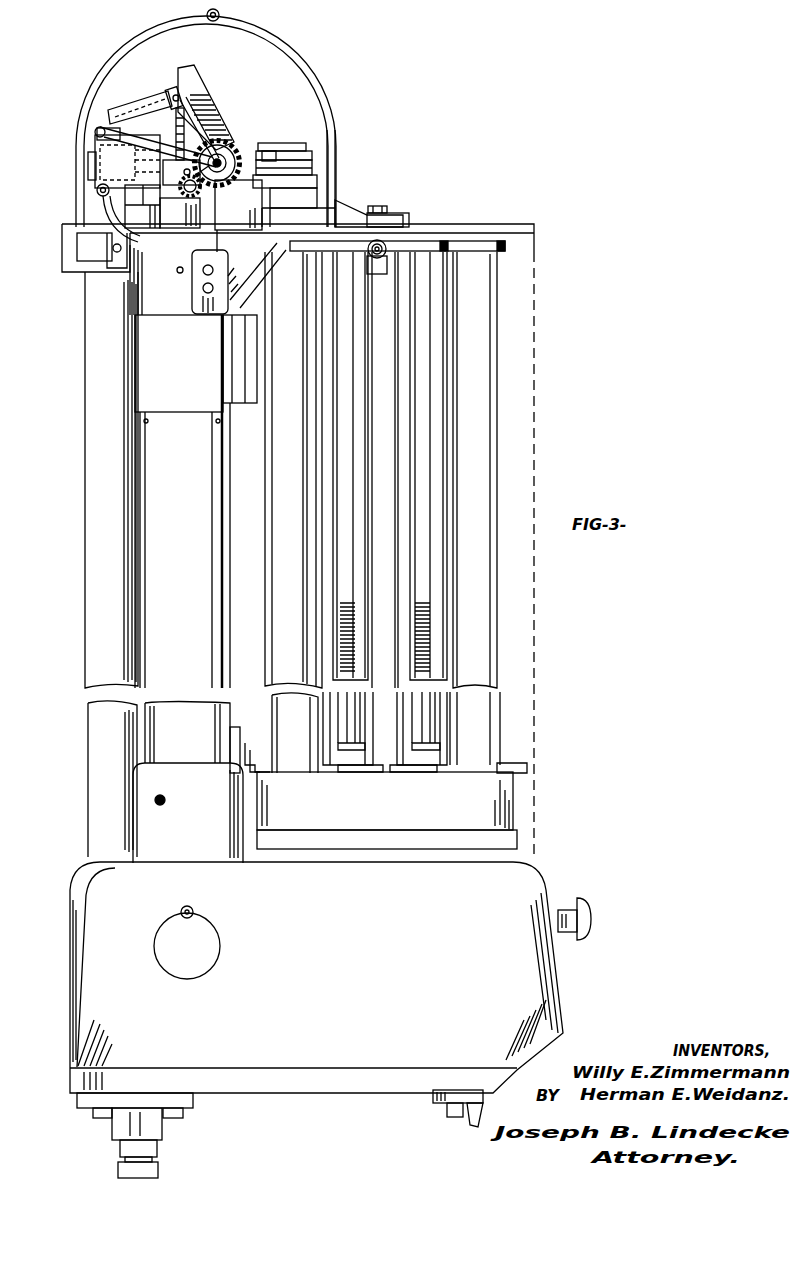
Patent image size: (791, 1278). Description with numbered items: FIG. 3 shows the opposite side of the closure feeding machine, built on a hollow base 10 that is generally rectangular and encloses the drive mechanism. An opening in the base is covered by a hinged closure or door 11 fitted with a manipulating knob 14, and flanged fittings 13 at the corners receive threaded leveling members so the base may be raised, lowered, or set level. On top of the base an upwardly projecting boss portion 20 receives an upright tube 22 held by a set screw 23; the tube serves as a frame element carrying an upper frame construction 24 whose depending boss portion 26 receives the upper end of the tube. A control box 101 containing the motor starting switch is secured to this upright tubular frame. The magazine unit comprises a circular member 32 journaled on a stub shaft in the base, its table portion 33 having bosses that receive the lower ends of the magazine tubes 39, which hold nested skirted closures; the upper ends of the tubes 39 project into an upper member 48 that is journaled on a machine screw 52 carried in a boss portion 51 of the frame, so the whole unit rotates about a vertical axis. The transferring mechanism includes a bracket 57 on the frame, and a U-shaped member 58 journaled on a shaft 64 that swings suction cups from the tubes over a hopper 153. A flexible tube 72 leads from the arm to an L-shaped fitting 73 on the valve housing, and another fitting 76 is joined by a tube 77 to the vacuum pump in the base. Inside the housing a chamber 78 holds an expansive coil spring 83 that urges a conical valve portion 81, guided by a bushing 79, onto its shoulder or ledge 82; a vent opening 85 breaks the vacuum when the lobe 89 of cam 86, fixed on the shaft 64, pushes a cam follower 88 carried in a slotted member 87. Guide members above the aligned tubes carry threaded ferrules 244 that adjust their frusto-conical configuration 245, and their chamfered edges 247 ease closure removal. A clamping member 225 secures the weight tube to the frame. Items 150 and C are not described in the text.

The hollow base 10 is at (64, 989).
The closure or door 11 is at (556, 898).
The flanged fittings 13 is at (78, 1103).
The manipulating knob 14 is at (594, 920).
The boss portion 20 is at (134, 806).
The tube 22 is at (140, 490).
The set screw 23 is at (160, 800).
The upper frame construction 24 is at (305, 230).
The depending boss portion 26 is at (140, 300).
The circular member 32 is at (516, 805).
The table portion 33 is at (500, 766).
The magazine tubes 39 is at (398, 400).
The upper rotatable member 48 is at (508, 245).
The boss portion 51 is at (393, 217).
The machine screw 52 is at (388, 207).
The bracket 57 is at (313, 158).
The U-shaped member 58 is at (163, 98).
The shaft 64 is at (238, 216).
The flexible tube 72 is at (212, 125).
The L-shaped fitting 73 is at (100, 135).
The fitting 76 is at (97, 192).
The tube 77 is at (134, 230).
The chamber 78 is at (95, 150).
The bushing 79 is at (151, 213).
The conical valve portion 81 is at (155, 146).
The shoulder or ledge 82 is at (142, 205).
The expansive coil spring 83 is at (88, 172).
The vent opening 85 is at (93, 98).
The cam 86 is at (238, 155).
The slotted member 87 is at (180, 213).
The cam follower 88 is at (213, 186).
The cam lobe 89 is at (232, 140).
The control box 101 is at (192, 300).
The cap 150 is at (274, 145).
The hopper 153 is at (200, 80).
The clamping member 225 is at (62, 266).
The ferrules 244 is at (317, 173).
The frusto-conical configuration 245 is at (310, 146).
The chamfered edge 247 is at (270, 150).
The rack C is at (413, 650).